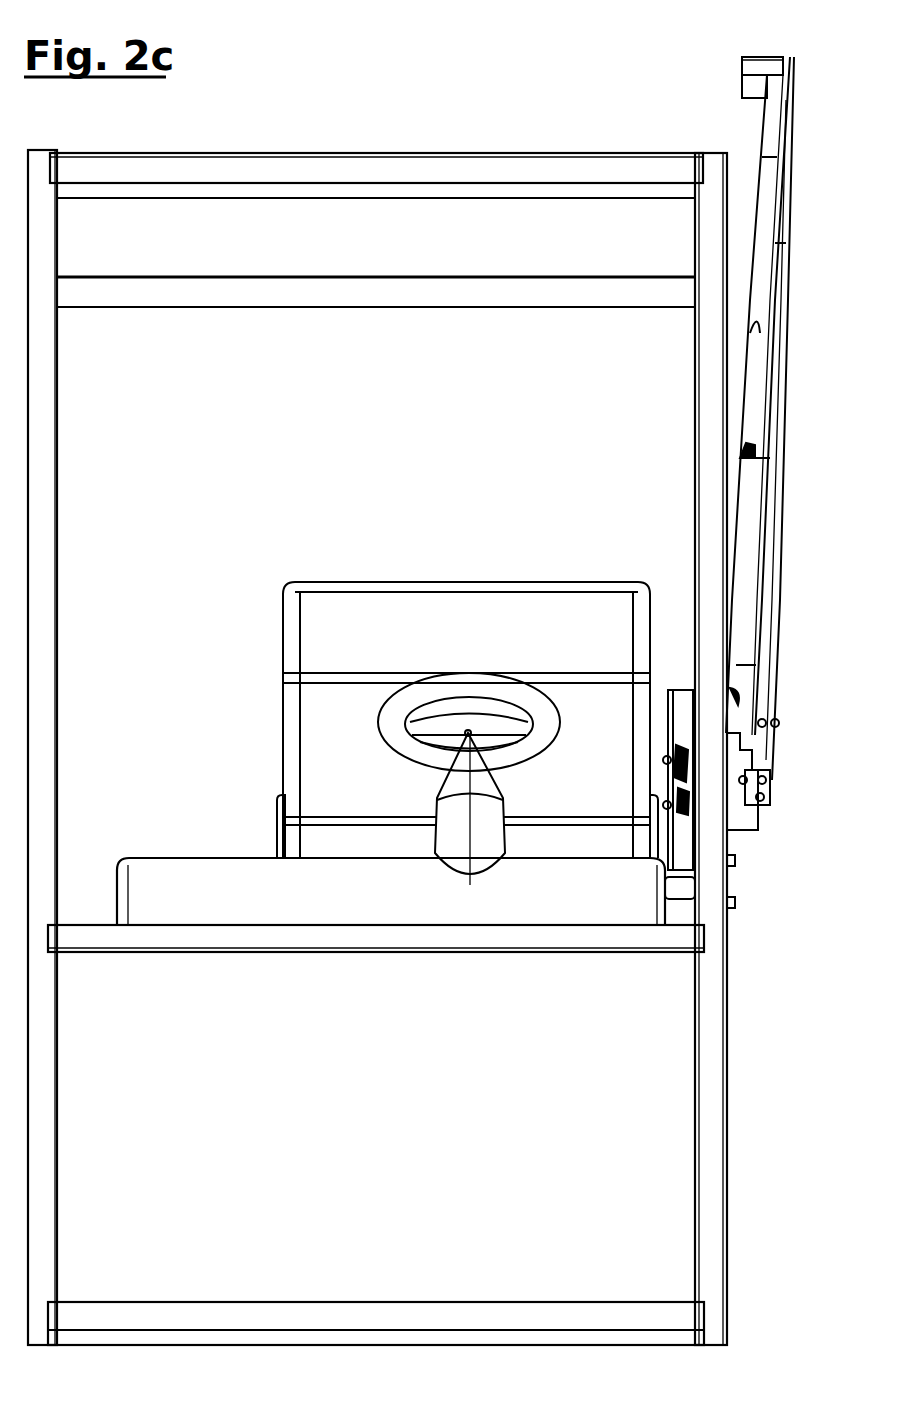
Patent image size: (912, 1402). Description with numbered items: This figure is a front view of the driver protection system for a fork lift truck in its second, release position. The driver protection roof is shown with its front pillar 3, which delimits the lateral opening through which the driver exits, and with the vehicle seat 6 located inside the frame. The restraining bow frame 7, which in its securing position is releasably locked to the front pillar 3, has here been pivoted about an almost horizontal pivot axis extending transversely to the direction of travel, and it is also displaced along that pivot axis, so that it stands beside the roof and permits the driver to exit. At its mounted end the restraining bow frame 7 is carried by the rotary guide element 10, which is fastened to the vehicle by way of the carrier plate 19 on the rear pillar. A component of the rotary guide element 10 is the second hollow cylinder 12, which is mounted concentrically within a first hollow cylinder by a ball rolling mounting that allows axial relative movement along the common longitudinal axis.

The front pillar 3 is at (45, 450).
The vehicle seat 6 is at (292, 742).
The restraining bow frame 7 is at (808, 411).
The rotary guide element 10 is at (742, 848).
The second hollow cylinder 12 is at (684, 690).
The carrier plate 19 is at (672, 740).